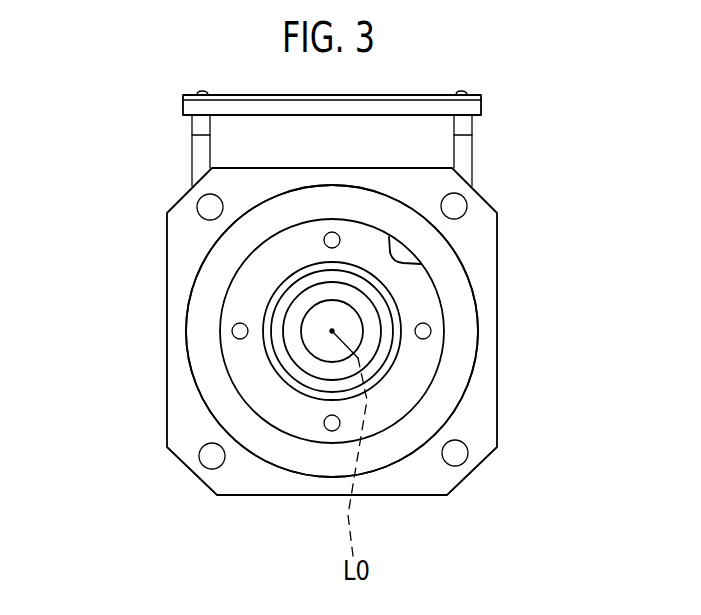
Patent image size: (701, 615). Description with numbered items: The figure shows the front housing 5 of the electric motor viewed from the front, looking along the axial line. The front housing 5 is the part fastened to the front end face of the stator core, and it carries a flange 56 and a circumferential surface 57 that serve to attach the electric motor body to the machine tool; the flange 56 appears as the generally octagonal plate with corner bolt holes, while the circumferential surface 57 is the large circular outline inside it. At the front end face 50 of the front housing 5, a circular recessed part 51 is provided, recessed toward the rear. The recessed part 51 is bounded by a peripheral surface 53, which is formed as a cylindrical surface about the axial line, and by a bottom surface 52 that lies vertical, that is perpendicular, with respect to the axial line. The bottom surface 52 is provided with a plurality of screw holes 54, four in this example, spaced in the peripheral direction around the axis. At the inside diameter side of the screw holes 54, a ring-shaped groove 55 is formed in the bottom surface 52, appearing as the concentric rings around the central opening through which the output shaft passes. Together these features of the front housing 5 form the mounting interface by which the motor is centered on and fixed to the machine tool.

The front housing 5 is at (498, 425).
The front end face 50 is at (403, 427).
The circular recessed part 51 is at (418, 305).
The bottom surface 52 is at (413, 365).
The peripheral surface 53 is at (421, 263).
The screw holes 54 is at (323, 238).
The ring-shaped groove 55 is at (291, 377).
The flange 56 is at (182, 424).
The circumferential surface 57 is at (190, 348).